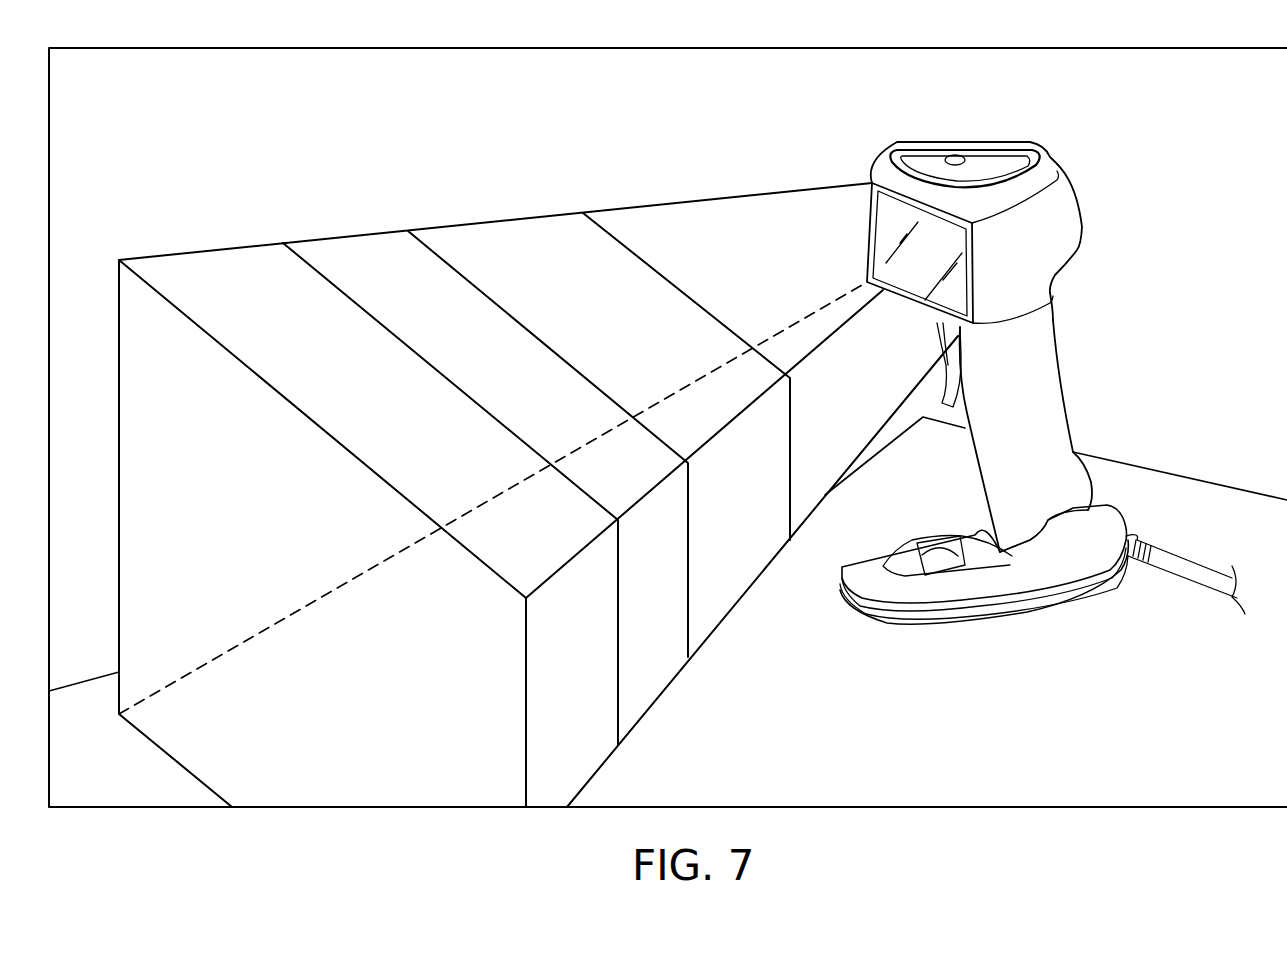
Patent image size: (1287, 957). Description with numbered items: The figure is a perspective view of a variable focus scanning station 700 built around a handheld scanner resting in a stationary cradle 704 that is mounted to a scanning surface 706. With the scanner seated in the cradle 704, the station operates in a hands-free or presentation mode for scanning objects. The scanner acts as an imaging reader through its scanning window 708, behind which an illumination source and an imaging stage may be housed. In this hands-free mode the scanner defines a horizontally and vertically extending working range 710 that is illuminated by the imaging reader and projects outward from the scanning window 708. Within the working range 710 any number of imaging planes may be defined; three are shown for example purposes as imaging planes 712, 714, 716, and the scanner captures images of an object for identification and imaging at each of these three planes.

The scanning station 700 is at (1104, 106).
The stationary cradle 704 is at (1039, 580).
The scanning surface 706 is at (1182, 492).
The scanning window 708 is at (893, 217).
The working range 710 is at (186, 253).
The imaging plane 712 is at (585, 213).
The imaging plane 714 is at (411, 231).
The imaging plane 716 is at (287, 243).